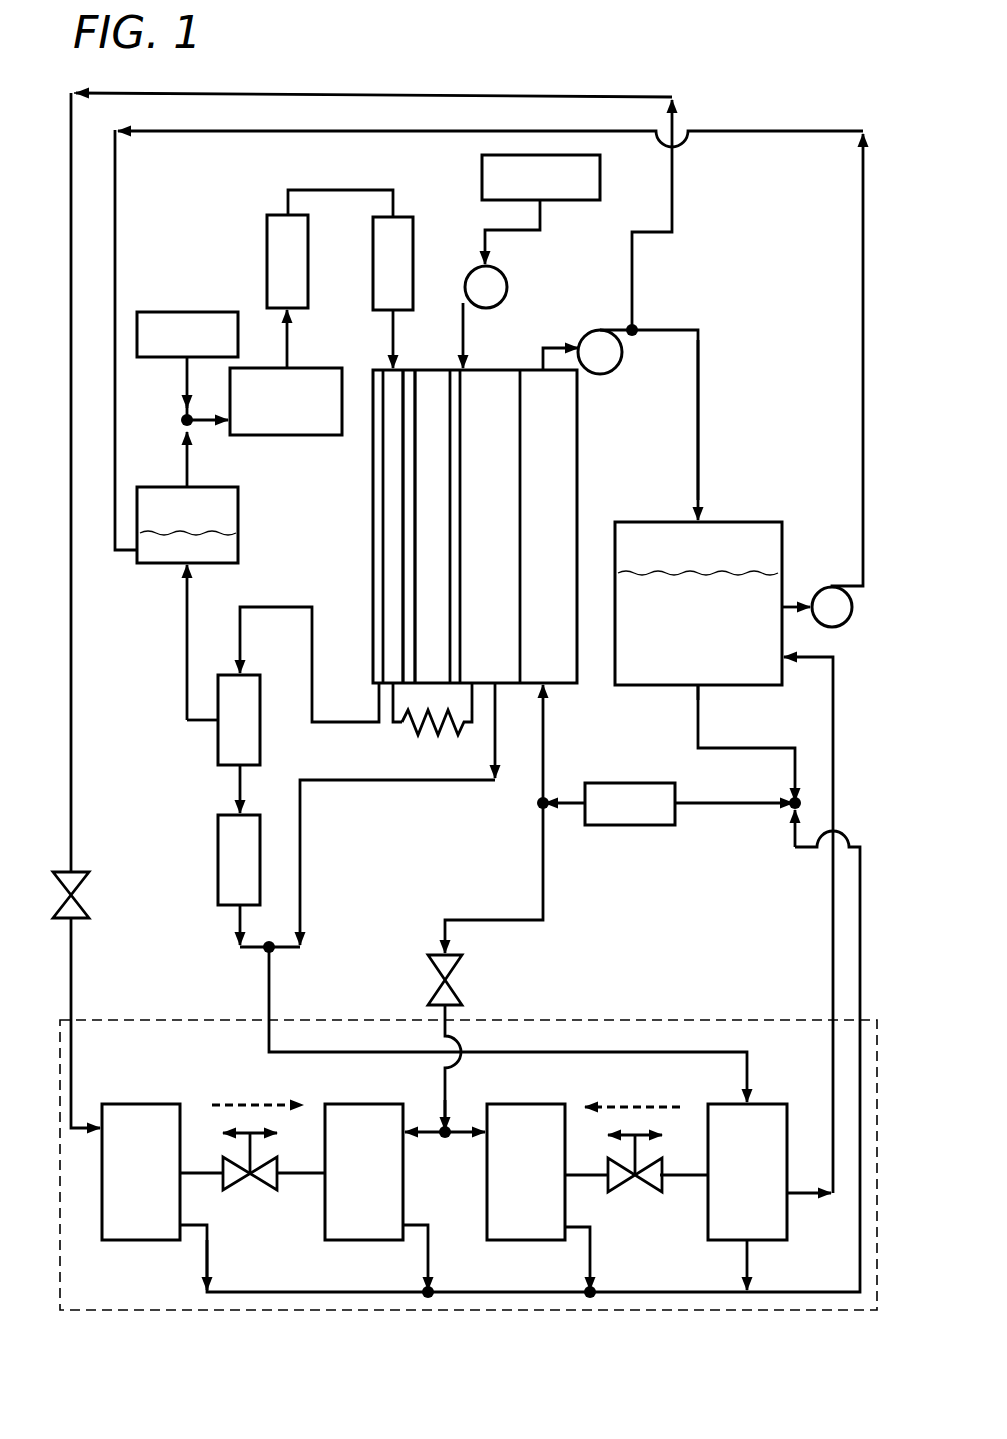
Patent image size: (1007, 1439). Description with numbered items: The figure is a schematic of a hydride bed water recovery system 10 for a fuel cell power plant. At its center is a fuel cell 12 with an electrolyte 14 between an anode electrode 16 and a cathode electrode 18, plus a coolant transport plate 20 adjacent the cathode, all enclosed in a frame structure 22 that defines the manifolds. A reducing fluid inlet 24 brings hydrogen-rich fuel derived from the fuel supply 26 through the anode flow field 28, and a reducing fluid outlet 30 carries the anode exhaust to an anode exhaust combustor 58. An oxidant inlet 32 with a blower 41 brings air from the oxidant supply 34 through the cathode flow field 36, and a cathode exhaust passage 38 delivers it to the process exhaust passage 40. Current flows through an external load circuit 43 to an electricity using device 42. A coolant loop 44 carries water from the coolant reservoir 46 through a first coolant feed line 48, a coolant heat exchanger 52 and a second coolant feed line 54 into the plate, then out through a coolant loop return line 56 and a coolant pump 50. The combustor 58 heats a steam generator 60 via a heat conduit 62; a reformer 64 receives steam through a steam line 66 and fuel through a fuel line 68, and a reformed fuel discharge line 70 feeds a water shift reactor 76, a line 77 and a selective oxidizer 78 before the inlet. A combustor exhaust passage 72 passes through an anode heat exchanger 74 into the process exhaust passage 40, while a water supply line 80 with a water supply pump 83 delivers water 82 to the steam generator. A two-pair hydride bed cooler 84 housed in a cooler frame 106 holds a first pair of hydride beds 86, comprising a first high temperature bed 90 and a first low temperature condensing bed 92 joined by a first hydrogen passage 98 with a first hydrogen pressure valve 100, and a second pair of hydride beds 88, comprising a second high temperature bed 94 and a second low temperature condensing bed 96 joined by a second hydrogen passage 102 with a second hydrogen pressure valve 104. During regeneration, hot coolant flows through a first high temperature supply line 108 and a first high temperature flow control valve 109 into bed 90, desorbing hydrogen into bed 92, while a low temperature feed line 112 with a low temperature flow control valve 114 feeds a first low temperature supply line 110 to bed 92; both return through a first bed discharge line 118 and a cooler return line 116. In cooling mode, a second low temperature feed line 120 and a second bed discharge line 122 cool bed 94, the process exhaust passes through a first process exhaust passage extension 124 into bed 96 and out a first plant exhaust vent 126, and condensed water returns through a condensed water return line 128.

The hydride bed water recovery system 10 is at (770, 93).
The fuel cell 12 is at (455, 193).
The electrolyte 14 is at (420, 378).
The anode electrode 16 is at (405, 452).
The cathode electrode 18 is at (458, 403).
The coolant transport plate 20 is at (560, 393).
The frame structure 22 is at (378, 582).
The reducing fluid inlet 24 is at (388, 340).
The fuel supply 26 is at (196, 311).
The anode flow field 28 is at (392, 547).
The reducing fluid outlet 30 is at (313, 668).
The oxidant inlet 32 is at (463, 320).
The oxidant supply 34 is at (560, 200).
The cathode flow field 36 is at (503, 387).
The cathode exhaust passage 38 is at (403, 780).
The process exhaust passage 40 is at (272, 1000).
The blower 41 is at (502, 273).
The electricity using device 42 is at (427, 723).
The external load circuit 43 is at (400, 723).
The coolant loop 44 is at (682, 466).
The coolant reservoir 46 is at (737, 540).
The first coolant feed line 48 is at (700, 707).
The coolant pump 50 is at (590, 330).
The coolant heat exchanger 52 is at (613, 808).
The second coolant feed line 54 is at (545, 763).
The coolant loop return line 56 is at (698, 328).
The anode exhaust combustor 58 is at (250, 695).
The steam generator 60 is at (200, 555).
The heat conduit 62 is at (185, 660).
The reformer 64 is at (302, 368).
The steam line 66 is at (197, 460).
The fuel line 68 is at (185, 372).
The reformed fuel discharge line 70 is at (283, 340).
The combustor exhaust passage 72 is at (220, 760).
The anode heat exchanger 74 is at (215, 838).
The water shift reactor 76 is at (270, 232).
The line 77 is at (350, 188).
The selective oxidizer 78 is at (376, 276).
The water supply line 80 is at (862, 212).
The water 82 is at (655, 683).
The water supply pump 83 is at (823, 588).
The two-pair hydride bed cooler 84 is at (740, 990).
The first pair of hydride beds 86 is at (195, 1092).
The second pair of hydride beds 88 is at (678, 1115).
The first high temperature bed 90 is at (120, 1215).
The first low temperature condensing bed 92 is at (375, 1113).
The second high temperature bed 94 is at (538, 1227).
The second low temperature condensing bed 96 is at (775, 1213).
The first hydrogen passage 98 is at (205, 1173).
The first hydrogen pressure valve 100 is at (263, 1185).
The second hydrogen passage 102 is at (590, 1177).
The second hydrogen pressure valve 104 is at (650, 1192).
The cooler frame 106 is at (150, 1020).
The first high temperature supply line 108 is at (673, 182).
The first high temperature flow control valve 109 is at (78, 882).
The first low temperature supply line 110 is at (427, 1137).
The low temperature feed line 112 is at (540, 845).
The low temperature flow control valve 114 is at (462, 962).
The cooler return line 116 is at (863, 875).
The first bed discharge line 118 is at (440, 1240).
The second low temperature feed line 120 is at (453, 1130).
The second bed discharge line 122 is at (592, 1233).
The first process exhaust passage extension 124 is at (600, 1052).
The first plant exhaust vent 126 is at (747, 1248).
The condensed water return line 128 is at (832, 1090).